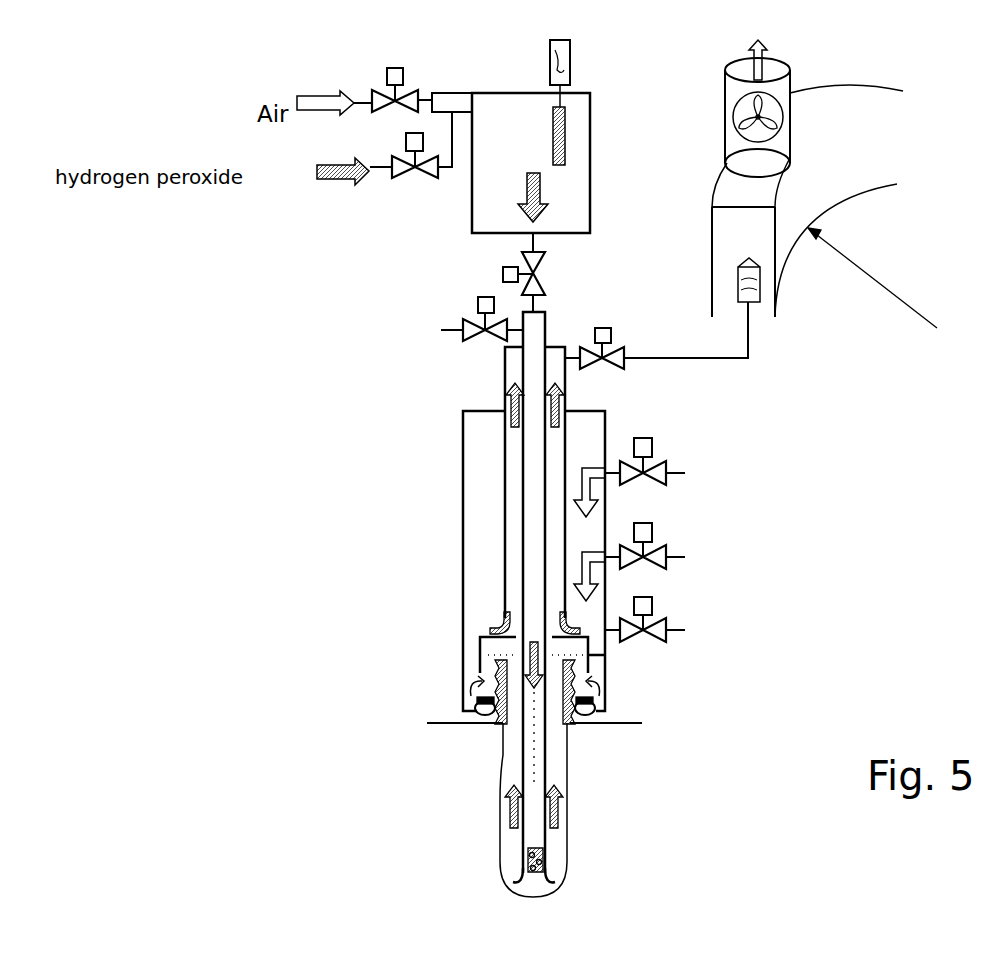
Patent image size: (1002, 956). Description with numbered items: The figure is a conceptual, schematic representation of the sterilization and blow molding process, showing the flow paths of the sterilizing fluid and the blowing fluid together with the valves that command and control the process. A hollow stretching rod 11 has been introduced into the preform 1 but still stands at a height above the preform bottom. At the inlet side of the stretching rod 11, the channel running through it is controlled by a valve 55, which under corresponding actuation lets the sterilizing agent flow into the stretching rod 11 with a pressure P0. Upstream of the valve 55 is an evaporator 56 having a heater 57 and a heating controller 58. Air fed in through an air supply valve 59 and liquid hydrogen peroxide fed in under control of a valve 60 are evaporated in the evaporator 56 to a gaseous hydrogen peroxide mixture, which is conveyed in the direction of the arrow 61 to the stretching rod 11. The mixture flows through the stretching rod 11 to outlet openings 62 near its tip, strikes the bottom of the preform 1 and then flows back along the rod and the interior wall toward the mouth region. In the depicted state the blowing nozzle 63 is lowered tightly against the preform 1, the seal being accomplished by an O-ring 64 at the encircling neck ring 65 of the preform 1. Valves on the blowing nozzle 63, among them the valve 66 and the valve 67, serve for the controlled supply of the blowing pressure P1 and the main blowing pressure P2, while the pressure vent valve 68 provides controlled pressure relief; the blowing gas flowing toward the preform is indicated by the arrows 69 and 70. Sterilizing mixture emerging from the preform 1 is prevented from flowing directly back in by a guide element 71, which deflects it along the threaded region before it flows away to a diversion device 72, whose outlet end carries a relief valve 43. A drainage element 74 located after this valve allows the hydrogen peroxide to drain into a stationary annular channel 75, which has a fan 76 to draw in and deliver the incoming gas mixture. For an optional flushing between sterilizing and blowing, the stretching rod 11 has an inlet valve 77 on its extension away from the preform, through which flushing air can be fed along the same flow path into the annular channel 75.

The preform 1 is at (567, 770).
The stretching rod 11 is at (547, 450).
The exhaust valve P0-EXH 43 is at (612, 346).
The valve 55 is at (542, 263).
The evaporator 56 is at (590, 134).
The heater 57 is at (553, 128).
The heating controller 58 is at (570, 55).
The air supply valve 59 is at (388, 72).
The valve 60 is at (410, 180).
The arrow 61 is at (545, 185).
The outlet openings 62 is at (542, 846).
The blowing nozzle 63 is at (462, 505).
The O-ring 64 is at (482, 712).
The neck ring 65 is at (498, 722).
The valve 66 is at (660, 487).
The second pressure valve P2 67 is at (660, 570).
The pressure vent valve 68 is at (658, 645).
The arrow 69 is at (583, 497).
The arrow 70 is at (585, 575).
The guide element 71 is at (604, 650).
The diversion device 72 is at (566, 386).
The drainage element 74 is at (751, 345).
The annular channel 75 is at (858, 176).
The fan 76 is at (772, 67).
The inlet valve 77 is at (462, 355).